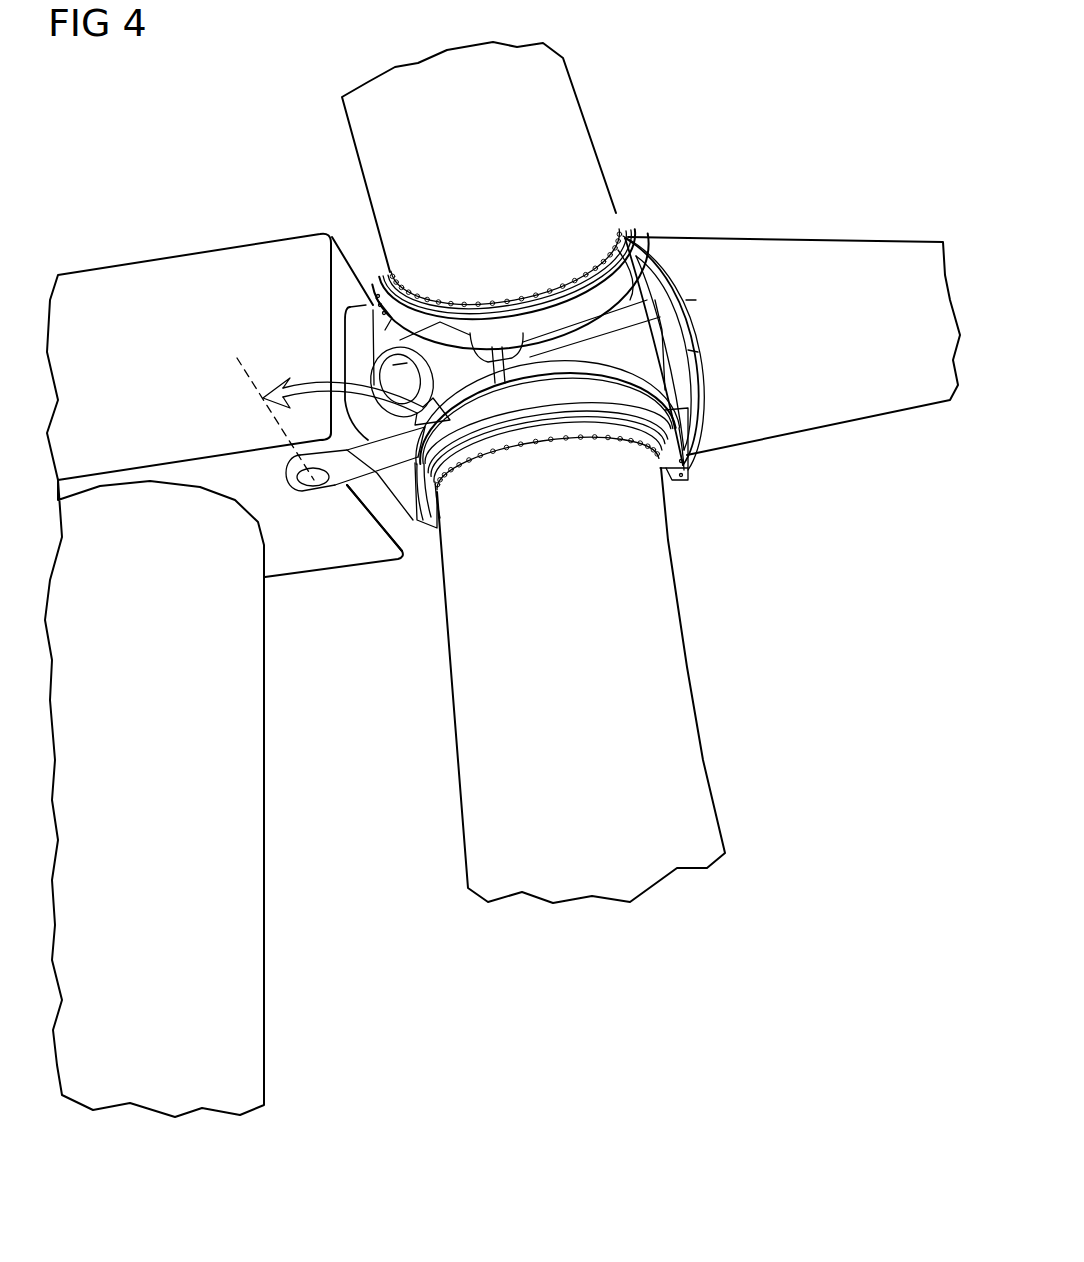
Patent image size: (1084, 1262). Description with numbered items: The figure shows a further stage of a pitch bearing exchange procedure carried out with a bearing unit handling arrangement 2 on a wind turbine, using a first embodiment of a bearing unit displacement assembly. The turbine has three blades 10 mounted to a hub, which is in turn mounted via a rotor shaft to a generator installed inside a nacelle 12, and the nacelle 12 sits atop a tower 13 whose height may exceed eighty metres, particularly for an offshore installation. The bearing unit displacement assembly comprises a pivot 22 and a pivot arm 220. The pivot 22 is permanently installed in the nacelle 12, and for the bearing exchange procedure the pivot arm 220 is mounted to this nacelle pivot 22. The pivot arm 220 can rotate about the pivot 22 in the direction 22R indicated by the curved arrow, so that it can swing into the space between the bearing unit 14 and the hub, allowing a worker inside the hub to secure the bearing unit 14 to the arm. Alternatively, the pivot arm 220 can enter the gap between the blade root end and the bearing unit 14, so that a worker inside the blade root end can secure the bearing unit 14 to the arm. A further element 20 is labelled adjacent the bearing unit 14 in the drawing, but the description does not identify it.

The bearing unit handling arrangement 2 is at (785, 490).
The blade 10 is at (585, 160).
The nacelle 12 is at (177, 268).
The tower 13 is at (250, 705).
The bearing unit 14 is at (590, 395).
The pitch lock bracket 20 is at (432, 530).
The pivot 22 is at (311, 490).
The pivot arm 220 is at (377, 465).
The direction of rotation 22R is at (308, 392).